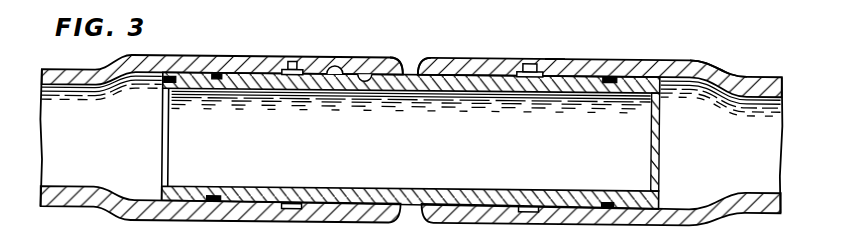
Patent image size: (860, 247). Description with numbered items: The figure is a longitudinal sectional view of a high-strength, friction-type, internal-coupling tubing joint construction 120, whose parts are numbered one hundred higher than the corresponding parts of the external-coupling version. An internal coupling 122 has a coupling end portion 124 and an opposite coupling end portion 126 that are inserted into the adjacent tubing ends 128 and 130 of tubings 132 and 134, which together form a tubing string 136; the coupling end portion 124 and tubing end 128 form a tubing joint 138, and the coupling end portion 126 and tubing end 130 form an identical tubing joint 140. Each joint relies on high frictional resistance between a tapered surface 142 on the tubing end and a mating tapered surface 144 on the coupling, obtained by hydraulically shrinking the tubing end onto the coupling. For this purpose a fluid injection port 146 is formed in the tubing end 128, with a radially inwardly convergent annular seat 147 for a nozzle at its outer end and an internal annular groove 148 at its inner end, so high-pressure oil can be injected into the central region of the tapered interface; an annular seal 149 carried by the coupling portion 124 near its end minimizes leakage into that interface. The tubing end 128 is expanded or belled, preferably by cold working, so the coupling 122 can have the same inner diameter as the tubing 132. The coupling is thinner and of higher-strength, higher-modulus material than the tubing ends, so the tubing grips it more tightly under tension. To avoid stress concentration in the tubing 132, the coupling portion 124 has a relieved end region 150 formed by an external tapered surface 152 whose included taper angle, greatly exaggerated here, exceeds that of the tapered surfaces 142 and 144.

The tubing joint construction 120 is at (589, 53).
The internal coupling 122 is at (418, 66).
The coupling end portion 124 is at (258, 72).
The coupling end portion 126 is at (634, 62).
The tubing end 128 is at (193, 60).
The tubing end 130 is at (499, 60).
The tubing 132 is at (72, 68).
The tubing 134 is at (757, 78).
The tubing string 136 is at (735, 52).
The tubing joint 138 is at (365, 50).
The tubing joint 140 is at (556, 54).
The tapered surface 142 is at (387, 70).
The tapered surface 144 is at (342, 66).
The fluid injection port 146 is at (293, 62).
The annular seat 147 is at (300, 64).
The internal annular groove 148 is at (291, 202).
The annular seal 149 is at (219, 191).
The relieved end region 150 is at (193, 100).
The external tapered surface 152 is at (157, 83).